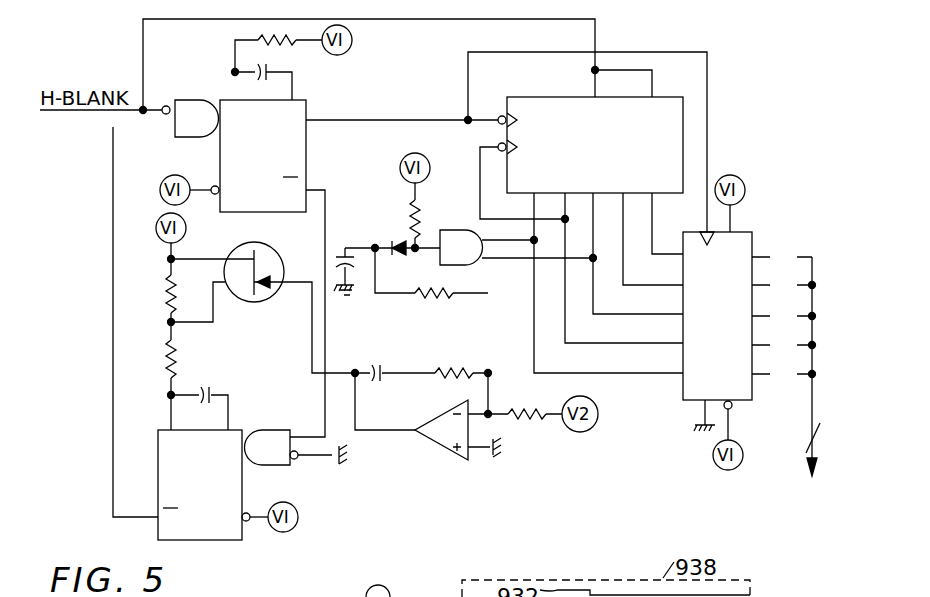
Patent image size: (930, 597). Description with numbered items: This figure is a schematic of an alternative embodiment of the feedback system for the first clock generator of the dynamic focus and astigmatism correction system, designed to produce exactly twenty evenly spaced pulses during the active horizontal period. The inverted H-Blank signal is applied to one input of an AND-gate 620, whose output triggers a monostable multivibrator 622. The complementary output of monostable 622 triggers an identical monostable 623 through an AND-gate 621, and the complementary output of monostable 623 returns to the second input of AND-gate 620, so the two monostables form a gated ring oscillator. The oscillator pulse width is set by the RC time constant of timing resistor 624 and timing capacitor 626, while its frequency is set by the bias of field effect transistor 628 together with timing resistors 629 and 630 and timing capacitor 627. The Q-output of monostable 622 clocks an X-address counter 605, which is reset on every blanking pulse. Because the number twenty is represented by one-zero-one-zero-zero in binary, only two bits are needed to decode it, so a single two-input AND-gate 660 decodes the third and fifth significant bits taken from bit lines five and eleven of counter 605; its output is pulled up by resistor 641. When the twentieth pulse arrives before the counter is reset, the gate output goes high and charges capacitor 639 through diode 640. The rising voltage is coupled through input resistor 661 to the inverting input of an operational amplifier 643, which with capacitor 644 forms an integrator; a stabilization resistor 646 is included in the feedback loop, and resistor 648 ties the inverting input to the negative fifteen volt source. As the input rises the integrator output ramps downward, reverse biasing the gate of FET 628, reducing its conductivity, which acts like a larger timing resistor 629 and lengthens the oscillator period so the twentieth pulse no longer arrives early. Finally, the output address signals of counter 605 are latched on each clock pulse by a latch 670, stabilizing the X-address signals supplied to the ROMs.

The X-address counter 605 is at (543, 97).
The AND-gate 620 is at (207, 100).
The AND-gate 621 is at (255, 432).
The monostable multivibrator 622 is at (306, 100).
The monostable 623 is at (243, 496).
The timing resistor 624 is at (262, 38).
The timing capacitor 626 is at (270, 68).
The timing capacitor 627 is at (213, 372).
The field effect transistor 628 is at (272, 247).
The timing resistor 629 is at (168, 280).
The timing resistor 630 is at (176, 350).
The capacitor 639 is at (338, 255).
The diode 640 is at (396, 256).
The pull-up resistor 641 is at (412, 206).
The operational amplifier 643 is at (455, 457).
The capacitor 644 is at (378, 365).
The stabilization resistor 646 is at (462, 368).
The resistor 648 is at (541, 398).
The AND-gate 660 is at (478, 231).
The input resistor 661 is at (437, 294).
The latch 670 is at (752, 236).